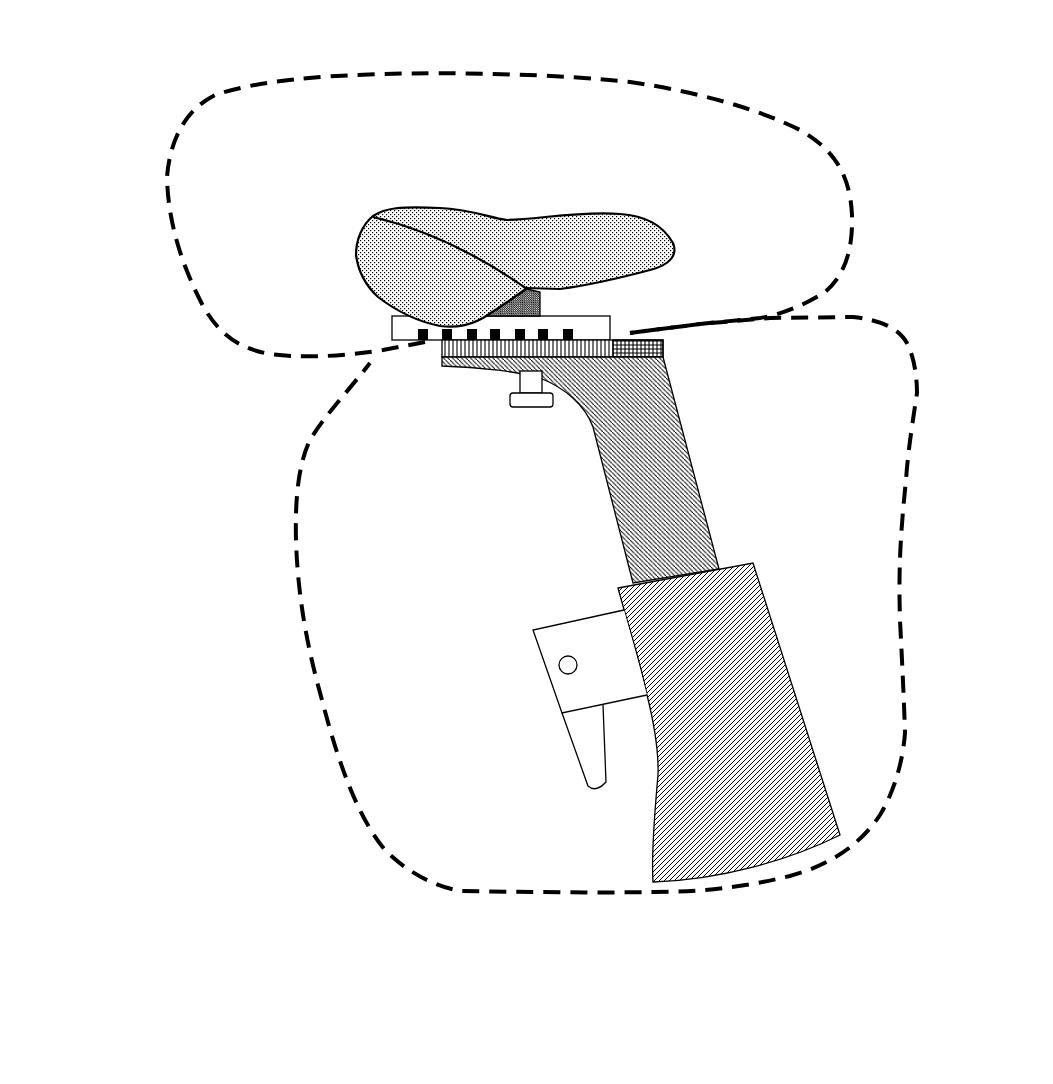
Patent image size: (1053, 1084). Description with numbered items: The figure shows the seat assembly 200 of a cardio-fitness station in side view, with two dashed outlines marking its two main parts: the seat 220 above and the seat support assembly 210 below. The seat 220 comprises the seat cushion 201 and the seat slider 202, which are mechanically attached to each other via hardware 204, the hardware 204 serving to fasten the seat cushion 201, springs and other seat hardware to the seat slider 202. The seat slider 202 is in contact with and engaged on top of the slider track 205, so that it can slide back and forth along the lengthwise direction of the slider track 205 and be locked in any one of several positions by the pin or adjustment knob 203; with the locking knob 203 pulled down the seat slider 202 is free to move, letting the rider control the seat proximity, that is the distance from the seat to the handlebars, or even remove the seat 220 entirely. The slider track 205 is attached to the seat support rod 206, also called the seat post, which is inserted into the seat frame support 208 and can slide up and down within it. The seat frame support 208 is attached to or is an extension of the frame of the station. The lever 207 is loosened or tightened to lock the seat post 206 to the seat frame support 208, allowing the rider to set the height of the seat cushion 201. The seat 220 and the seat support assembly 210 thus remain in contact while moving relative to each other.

The seat assembly 200 is at (292, 749).
The seat cushion 201 is at (445, 223).
The seat slider 202 is at (405, 335).
The pin (adjustment knob) 203 is at (533, 402).
The hardware 204 is at (540, 300).
The slider track 205 is at (650, 347).
The seat support rod 206 is at (673, 493).
The lever 207 is at (577, 639).
The seat frame support 208 is at (702, 827).
The seat support assembly 210 is at (907, 740).
The seat 220 is at (847, 175).